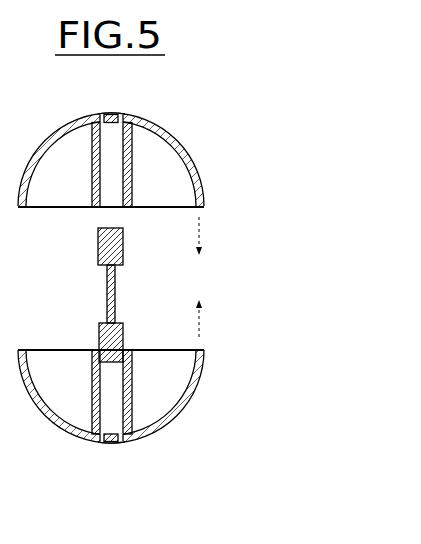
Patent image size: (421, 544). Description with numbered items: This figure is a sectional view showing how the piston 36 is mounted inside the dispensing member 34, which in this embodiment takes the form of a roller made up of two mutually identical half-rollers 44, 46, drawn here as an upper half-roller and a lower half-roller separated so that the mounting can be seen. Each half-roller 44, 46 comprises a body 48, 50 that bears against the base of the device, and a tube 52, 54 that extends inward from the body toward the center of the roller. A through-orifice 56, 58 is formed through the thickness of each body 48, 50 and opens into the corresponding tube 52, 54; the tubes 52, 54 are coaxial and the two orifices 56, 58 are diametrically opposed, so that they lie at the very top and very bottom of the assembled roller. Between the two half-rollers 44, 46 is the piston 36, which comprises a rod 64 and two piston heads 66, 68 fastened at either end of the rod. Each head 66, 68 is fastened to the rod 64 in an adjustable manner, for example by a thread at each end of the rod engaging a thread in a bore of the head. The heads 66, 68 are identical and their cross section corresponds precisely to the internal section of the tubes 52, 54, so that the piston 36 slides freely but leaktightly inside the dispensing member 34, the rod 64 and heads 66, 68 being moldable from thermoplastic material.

The dispensing member 34 is at (132, 135).
The piston 36 is at (126, 289).
The half-roller 44 is at (38, 413).
The half-roller 46 is at (40, 142).
The body 48 is at (173, 417).
The body 50 is at (175, 140).
The tube 52 is at (127, 383).
The tube 54 is at (130, 172).
The through-orifice 56 is at (107, 445).
The through-orifice 58 is at (107, 111).
The rod 64 is at (110, 297).
The piston head 66 is at (105, 336).
The piston head 68 is at (105, 250).